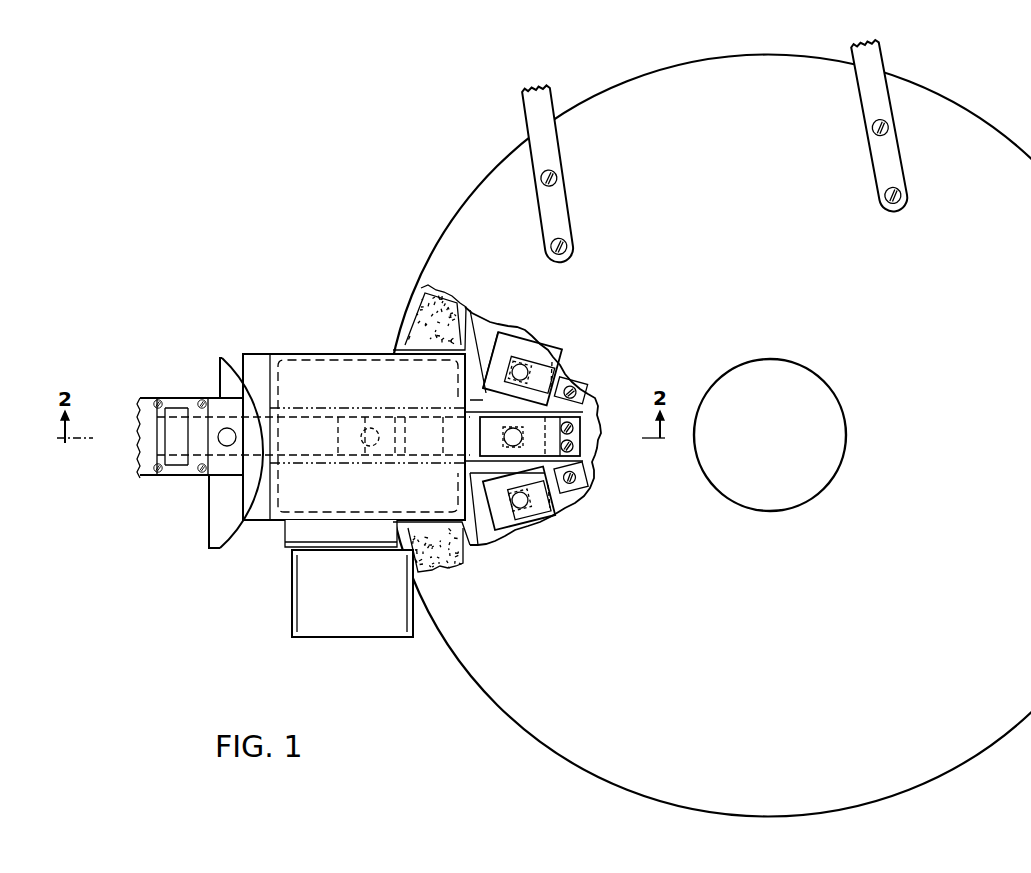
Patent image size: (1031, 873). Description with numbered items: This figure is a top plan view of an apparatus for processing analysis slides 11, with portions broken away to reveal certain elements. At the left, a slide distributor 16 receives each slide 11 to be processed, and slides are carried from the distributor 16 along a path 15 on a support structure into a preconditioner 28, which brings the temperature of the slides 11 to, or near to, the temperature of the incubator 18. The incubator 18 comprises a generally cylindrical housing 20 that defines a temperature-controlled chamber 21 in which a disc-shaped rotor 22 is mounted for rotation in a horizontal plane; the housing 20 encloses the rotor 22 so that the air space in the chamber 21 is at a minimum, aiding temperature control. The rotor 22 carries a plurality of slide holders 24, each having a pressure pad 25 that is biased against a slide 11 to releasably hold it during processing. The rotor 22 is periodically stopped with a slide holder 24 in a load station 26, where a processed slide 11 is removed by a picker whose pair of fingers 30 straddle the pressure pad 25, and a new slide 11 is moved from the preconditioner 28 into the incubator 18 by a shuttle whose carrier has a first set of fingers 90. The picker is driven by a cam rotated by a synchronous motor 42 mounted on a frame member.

The analysis slide 11 is at (220, 468).
The path 15 is at (304, 466).
The slide distributor 16 is at (215, 388).
The incubator 18 is at (418, 288).
The housing 20 is at (469, 201).
The temperature-controlled chamber 21 is at (563, 408).
The rotor 22 is at (487, 337).
The slide holder 24 is at (512, 337).
The pressure pad 25 is at (550, 362).
The load station 26 is at (478, 394).
The preconditioner 28 is at (320, 353).
The fingers 30 is at (600, 438).
The synchronous motor 42 is at (291, 590).
The first set of fingers 90 is at (303, 458).